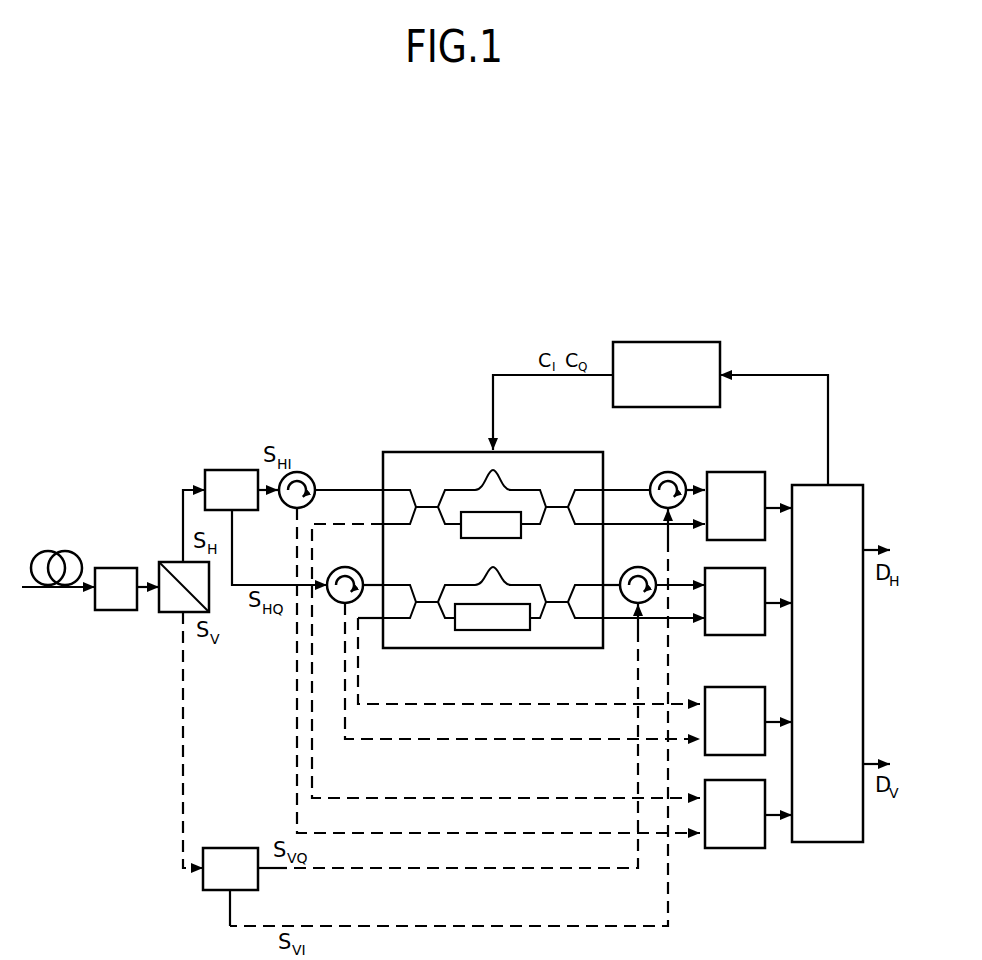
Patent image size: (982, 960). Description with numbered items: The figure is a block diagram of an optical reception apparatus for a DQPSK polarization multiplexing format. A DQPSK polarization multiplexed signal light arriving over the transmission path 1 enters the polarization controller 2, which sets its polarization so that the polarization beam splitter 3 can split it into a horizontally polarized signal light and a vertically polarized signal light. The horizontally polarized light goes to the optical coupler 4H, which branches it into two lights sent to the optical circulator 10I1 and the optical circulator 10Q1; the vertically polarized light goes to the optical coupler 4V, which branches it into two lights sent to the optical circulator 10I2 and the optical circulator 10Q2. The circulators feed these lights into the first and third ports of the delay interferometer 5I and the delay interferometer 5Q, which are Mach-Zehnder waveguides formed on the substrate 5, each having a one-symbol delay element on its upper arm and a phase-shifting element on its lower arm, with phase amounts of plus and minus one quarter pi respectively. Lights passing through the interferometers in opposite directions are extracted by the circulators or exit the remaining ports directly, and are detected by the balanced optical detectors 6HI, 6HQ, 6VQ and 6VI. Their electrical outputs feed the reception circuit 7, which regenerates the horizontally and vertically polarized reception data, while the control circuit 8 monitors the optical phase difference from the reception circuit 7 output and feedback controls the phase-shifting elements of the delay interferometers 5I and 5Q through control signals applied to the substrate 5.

The transmission path 1 is at (55, 552).
The polarization controller 2 is at (108, 568).
The polarization beam splitter 3 is at (169, 562).
The optical coupler 4H is at (218, 470).
The optical coupler 4V is at (210, 892).
The substrate 5 is at (420, 452).
The delay interferometer 5I is at (458, 470).
The delay interferometer 5Q is at (450, 634).
The balanced optical detector 6HI is at (742, 472).
The balanced optical detector 6HQ is at (727, 636).
The balanced optical detector 6VQ is at (743, 687).
The balanced optical detector 6VI is at (727, 848).
The reception circuit 7 is at (847, 485).
The control circuit 8 is at (678, 342).
The optical circulator 10I1 is at (303, 470).
The optical circulator 10Q1 is at (347, 567).
The optical circulator 10I2 is at (668, 472).
The optical circulator 10Q2 is at (637, 566).